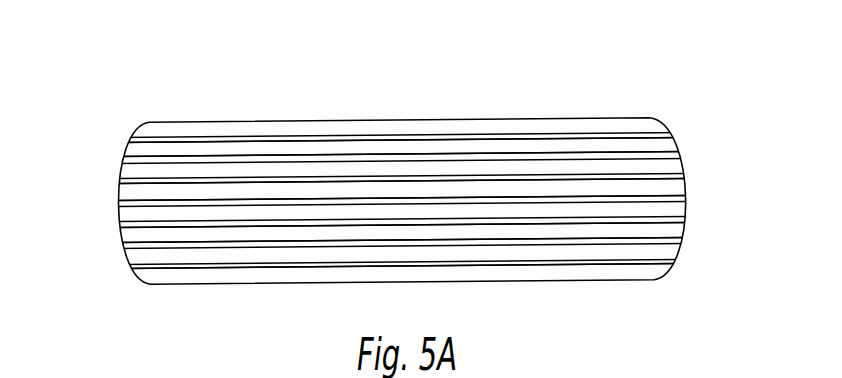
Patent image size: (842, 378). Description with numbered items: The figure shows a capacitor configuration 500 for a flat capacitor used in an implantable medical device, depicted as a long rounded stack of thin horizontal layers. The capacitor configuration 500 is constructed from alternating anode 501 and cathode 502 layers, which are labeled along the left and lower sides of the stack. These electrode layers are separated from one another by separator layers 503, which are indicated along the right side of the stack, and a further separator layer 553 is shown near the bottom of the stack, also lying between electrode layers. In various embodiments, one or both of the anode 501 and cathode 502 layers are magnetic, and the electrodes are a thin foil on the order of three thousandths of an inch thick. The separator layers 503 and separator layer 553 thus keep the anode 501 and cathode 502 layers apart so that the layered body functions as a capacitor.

The capacitor configuration 500 is at (662, 43).
The anode 501 is at (99, 133).
The cathode 502 is at (565, 150).
The separator layer 503 is at (670, 133).
The separator layer 553 is at (668, 267).